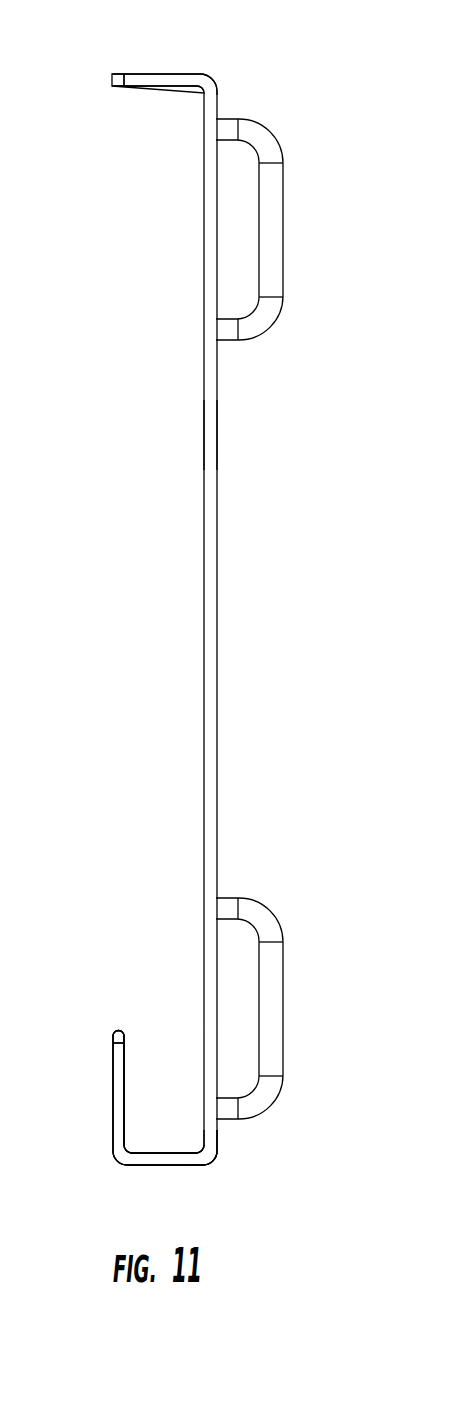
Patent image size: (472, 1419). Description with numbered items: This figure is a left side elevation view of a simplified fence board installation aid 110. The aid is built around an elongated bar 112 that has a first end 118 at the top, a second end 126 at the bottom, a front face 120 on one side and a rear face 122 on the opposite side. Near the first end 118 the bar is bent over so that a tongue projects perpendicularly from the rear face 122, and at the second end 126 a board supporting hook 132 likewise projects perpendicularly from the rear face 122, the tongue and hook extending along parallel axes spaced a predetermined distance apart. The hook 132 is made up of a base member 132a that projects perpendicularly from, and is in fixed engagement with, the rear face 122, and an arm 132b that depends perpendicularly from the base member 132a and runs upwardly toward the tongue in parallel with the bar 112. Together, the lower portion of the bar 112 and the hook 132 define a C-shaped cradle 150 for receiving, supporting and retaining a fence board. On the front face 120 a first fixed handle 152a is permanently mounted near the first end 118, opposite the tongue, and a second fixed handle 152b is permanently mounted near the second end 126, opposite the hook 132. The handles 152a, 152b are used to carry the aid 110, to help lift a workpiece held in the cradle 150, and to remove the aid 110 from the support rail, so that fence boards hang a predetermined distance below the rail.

The fence board installation aid 110 is at (112, 260).
The bar 112 is at (218, 597).
The first end 118 is at (153, 73).
The front face 120 is at (228, 433).
The rear face 122 is at (193, 433).
The second end 126 is at (217, 1137).
The board supporting hook 132 is at (92, 1150).
The base member 132a is at (152, 1153).
The arm 132b is at (112, 1082).
The C-shaped cradle 150 is at (212, 1020).
The first fixed handle 152a is at (283, 238).
The second fixed handle 152b is at (283, 1001).